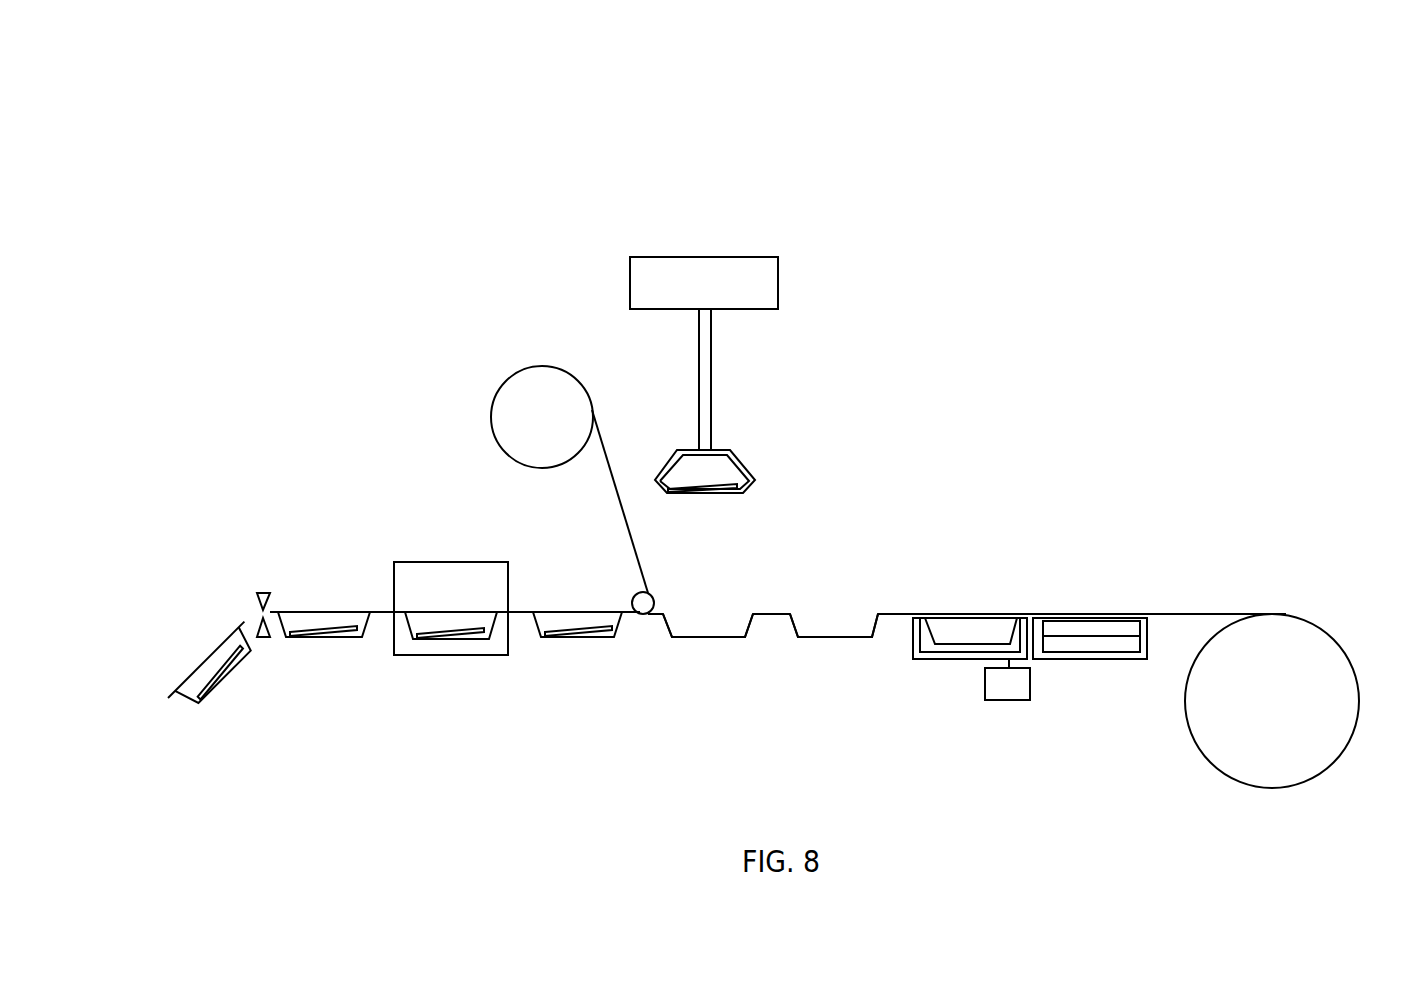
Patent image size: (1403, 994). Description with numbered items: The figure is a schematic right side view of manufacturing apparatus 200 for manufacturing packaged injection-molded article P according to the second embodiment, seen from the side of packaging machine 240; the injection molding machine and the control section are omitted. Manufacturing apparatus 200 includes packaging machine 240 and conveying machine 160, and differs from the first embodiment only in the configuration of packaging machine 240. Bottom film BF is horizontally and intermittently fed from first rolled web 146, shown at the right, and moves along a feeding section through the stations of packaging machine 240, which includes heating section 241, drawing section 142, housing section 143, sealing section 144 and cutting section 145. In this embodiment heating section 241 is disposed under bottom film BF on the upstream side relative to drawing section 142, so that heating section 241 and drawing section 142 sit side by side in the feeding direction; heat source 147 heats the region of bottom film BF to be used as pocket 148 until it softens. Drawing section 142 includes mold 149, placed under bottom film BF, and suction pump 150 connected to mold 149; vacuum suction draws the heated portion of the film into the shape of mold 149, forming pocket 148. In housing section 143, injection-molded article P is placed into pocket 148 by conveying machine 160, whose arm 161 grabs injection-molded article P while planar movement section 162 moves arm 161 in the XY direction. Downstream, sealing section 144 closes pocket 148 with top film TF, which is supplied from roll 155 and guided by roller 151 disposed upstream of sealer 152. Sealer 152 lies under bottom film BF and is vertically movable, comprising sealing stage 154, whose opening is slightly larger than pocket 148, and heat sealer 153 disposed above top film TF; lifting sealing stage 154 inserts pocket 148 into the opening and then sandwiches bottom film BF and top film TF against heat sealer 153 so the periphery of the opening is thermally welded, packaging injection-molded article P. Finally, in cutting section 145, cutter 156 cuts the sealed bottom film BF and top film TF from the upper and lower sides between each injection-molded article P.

The manufacturing apparatus 200 is at (868, 110).
The conveying machine 160 is at (671, 326).
The planar movement section 162 is at (638, 275).
The arm 161 is at (712, 346).
The film supply roller 155 is at (505, 410).
The top film TF is at (615, 492).
The roller 151 is at (635, 594).
The cutter 156 is at (268, 604).
The cutting section 145 is at (286, 728).
The sealing section 144 is at (450, 692).
The sealer 152 is at (451, 657).
The heat sealer 153 is at (423, 598).
The sealing stage 154 is at (471, 648).
The injection-molded article P is at (728, 491).
The housing section 143 is at (707, 674).
The pocket 148 is at (826, 614).
The drawing section 142 is at (964, 700).
The mold 149 is at (935, 645).
The suction pump 150 is at (992, 683).
The heat source 147 is at (1082, 630).
The heating section 241 is at (1076, 742).
The first rolled web 146 is at (1278, 630).
The bottom film BF is at (1090, 614).
The packaging machine 240 is at (1000, 392).